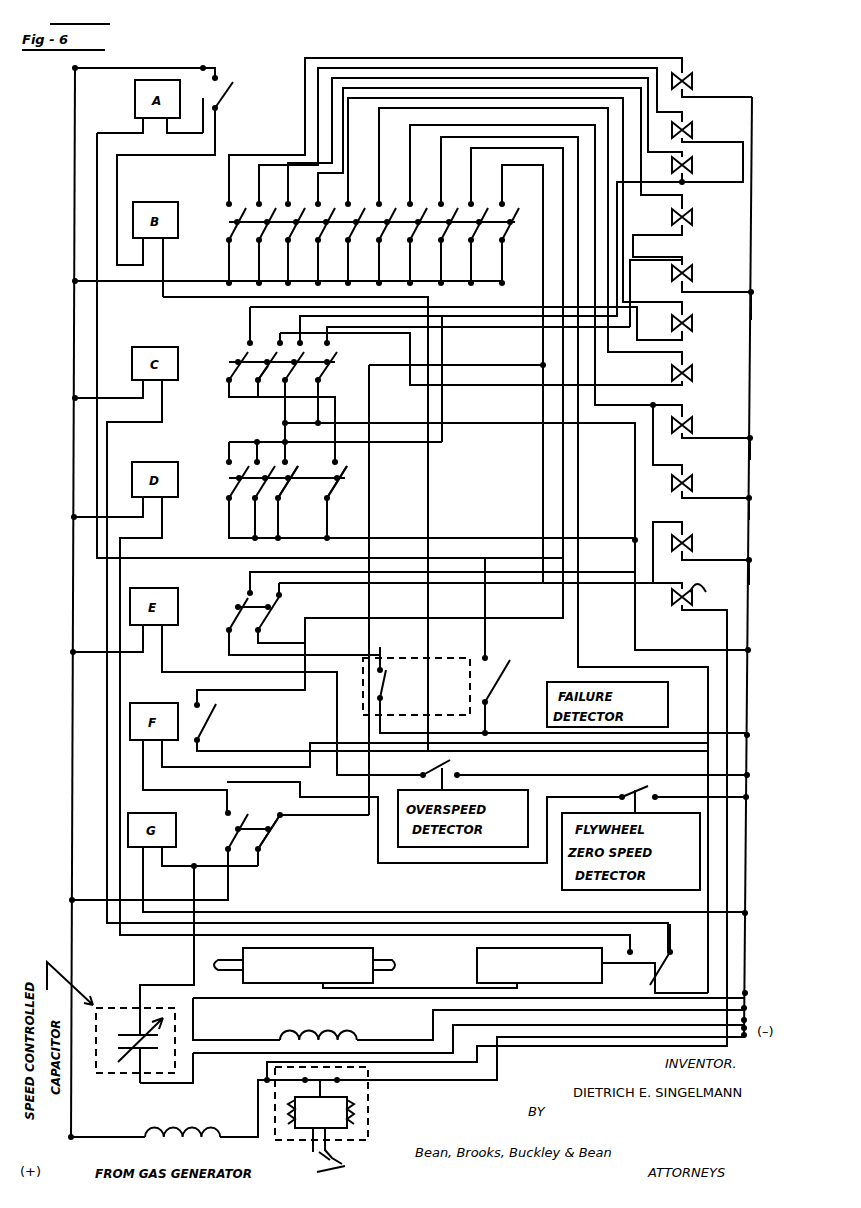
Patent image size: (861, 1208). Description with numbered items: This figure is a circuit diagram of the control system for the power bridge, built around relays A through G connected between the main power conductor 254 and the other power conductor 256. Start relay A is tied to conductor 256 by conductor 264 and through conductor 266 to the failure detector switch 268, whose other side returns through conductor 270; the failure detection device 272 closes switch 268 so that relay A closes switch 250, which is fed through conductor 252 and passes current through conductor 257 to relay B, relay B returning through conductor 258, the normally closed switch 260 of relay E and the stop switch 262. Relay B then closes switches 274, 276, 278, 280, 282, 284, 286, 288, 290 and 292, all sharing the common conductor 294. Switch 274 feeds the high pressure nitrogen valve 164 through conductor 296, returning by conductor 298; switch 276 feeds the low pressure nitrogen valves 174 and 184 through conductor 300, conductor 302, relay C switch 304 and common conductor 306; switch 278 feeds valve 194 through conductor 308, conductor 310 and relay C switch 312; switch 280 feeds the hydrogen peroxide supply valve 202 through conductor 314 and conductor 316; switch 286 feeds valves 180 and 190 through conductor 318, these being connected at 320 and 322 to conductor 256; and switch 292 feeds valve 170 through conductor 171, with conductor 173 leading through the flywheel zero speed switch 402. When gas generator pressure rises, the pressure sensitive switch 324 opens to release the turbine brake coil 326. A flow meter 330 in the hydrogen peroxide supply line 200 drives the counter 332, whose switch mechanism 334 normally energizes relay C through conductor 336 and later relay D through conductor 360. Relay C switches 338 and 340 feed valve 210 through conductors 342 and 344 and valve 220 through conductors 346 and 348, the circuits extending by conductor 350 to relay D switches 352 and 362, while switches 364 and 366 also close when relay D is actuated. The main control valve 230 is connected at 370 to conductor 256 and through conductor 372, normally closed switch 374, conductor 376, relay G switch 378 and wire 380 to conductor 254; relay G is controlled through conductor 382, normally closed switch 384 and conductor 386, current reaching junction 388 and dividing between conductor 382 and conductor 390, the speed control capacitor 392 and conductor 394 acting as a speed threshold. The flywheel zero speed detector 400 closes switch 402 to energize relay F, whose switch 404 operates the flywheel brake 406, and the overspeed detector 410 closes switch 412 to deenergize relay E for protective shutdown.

The high pressure nitrogen valve 164 is at (712, 85).
The low pressure nitrogen valve 174 is at (521, 219).
The low pressure nitrogen valve 184 is at (701, 171).
The low pressure nitrogen valve 194 is at (681, 237).
The hydrogen peroxide supply valve 202 is at (711, 278).
The valve 210 is at (490, 323).
The valve 220 is at (505, 359).
The valve 180 is at (700, 420).
The valve 190 is at (701, 451).
The main control valve 230 is at (701, 552).
The valve 170 is at (503, 831).
The conductor 171 is at (542, 482).
The conductor 173 is at (702, 612).
The hydrogen peroxide supply line 200 is at (396, 961).
The normally open switch 250 is at (226, 108).
The conductor 252 is at (158, 67).
The main power conductor 254 is at (74, 244).
The power conductor 256 is at (751, 198).
The conductor 257 is at (146, 160).
The conductor 258 is at (165, 260).
The normally closed switch 260 is at (283, 594).
The stop switch 262 is at (398, 658).
The conductor 264 is at (204, 98).
The conductor 266 is at (96, 173).
The failure detector switch 268 is at (540, 640).
The conductor 270 is at (488, 716).
The failure detection device 272 is at (590, 680).
The normally open switch 274 is at (234, 250).
The normally open switch 276 is at (264, 250).
The normally open switch 278 is at (293, 250).
The normally open switch 280 is at (323, 250).
The normally open switch 282 is at (353, 250).
The normally open switch 284 is at (384, 250).
The normally open switch 286 is at (415, 250).
The switch 288 is at (446, 250).
The switch 290 is at (476, 250).
The normally open switch 292 is at (507, 250).
The common conductor 294 is at (200, 282).
The conductor 296 is at (330, 58).
The conductor 298 is at (740, 97).
The conductor 300 is at (744, 165).
The conductor 302 is at (684, 186).
The switch 304 is at (298, 330).
The common conductor 306 is at (480, 426).
The conductor 308 is at (437, 88).
The conductor 310 is at (666, 237).
The switch 312 is at (346, 350).
The conductor 314 is at (505, 108).
The conductor 316 is at (752, 300).
The conductor 318 is at (600, 137).
The connection 320 is at (750, 445).
The connection 322 is at (749, 505).
The pressure sensitive switch 324 is at (368, 1098).
The turbine brake electromagnetic coil 326 is at (178, 1132).
The flow meter 330 is at (262, 945).
The counter mechanism 332 is at (482, 945).
The switch mechanism 334 is at (705, 982).
The conductor 336 is at (335, 923).
The switch 338 is at (223, 355).
The switch 340 is at (268, 372).
The conductor 342 is at (493, 307).
The conductor 344 is at (676, 287).
The conductor 346 is at (497, 366).
The conductor 348 is at (563, 125).
The conductor 350 is at (141, 386).
The normally open switch 352 is at (293, 484).
The conductor 360 is at (397, 935).
The normally open switch 362 is at (340, 485).
The normally open switch 364 is at (236, 483).
The normally open switch 366 is at (265, 518).
The connection 370 is at (749, 566).
The conductor 372 is at (610, 572).
The normally closed switch 374 is at (246, 600).
The conductor 376 is at (292, 716).
The normally open switch 378 is at (232, 822).
The wire 380 is at (229, 891).
The conductor 382 is at (213, 830).
The normally closed switch 384 is at (268, 834).
The conductor 386 is at (367, 817).
The junction 388 is at (192, 867).
The conductor 390 is at (194, 890).
The speed control capacitor assembly 392 is at (115, 1008).
The conductor 394 is at (195, 1067).
The flywheel zero speed detector 400 is at (660, 812).
The normally open switch 402 is at (640, 788).
The normally open switch 404 is at (207, 722).
The flywheel brake mechanism 406 is at (360, 1036).
The overspeed detector 410 is at (462, 775).
The normally open switch 412 is at (430, 768).